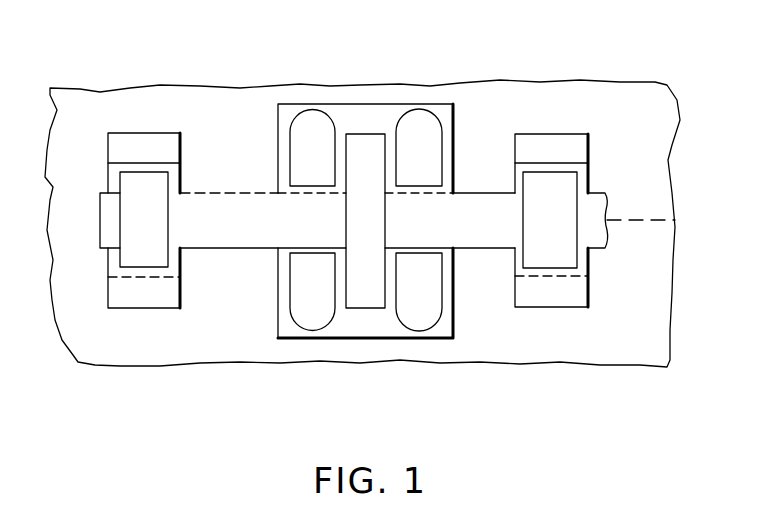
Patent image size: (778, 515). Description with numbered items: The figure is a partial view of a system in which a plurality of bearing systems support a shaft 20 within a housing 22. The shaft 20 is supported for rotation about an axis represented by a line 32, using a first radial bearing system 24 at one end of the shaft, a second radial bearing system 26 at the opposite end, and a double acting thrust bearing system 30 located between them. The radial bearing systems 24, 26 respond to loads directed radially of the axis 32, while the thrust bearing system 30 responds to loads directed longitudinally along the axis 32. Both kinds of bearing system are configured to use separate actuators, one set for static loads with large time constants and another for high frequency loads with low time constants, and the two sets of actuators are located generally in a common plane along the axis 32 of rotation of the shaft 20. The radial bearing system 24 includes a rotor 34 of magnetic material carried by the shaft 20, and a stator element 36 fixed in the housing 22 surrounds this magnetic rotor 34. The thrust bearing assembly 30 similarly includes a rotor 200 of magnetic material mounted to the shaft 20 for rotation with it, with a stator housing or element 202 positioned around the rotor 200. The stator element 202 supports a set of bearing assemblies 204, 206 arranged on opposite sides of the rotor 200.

The shaft 20 is at (603, 200).
The housing 22 is at (658, 93).
The first radial bearing system 24 is at (125, 120).
The second radial bearing system 26 is at (533, 118).
The double acting thrust bearing system 30 is at (440, 95).
The axis 32 is at (648, 218).
The rotor 34 is at (158, 182).
The stator element 36 is at (160, 138).
The rotor 200 is at (373, 135).
The stator element 202 is at (340, 113).
The bearing assembly 204 is at (423, 325).
The bearing assembly 206 is at (310, 326).